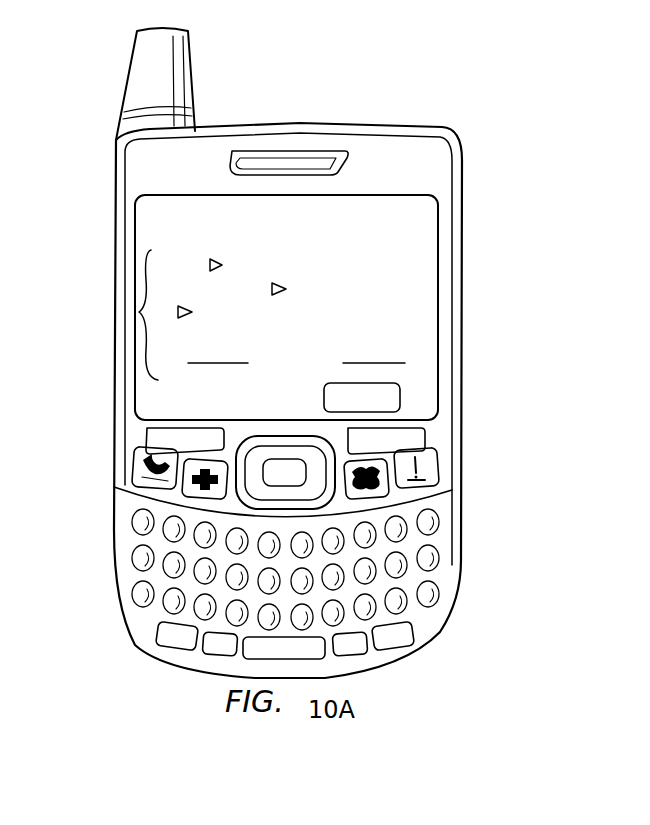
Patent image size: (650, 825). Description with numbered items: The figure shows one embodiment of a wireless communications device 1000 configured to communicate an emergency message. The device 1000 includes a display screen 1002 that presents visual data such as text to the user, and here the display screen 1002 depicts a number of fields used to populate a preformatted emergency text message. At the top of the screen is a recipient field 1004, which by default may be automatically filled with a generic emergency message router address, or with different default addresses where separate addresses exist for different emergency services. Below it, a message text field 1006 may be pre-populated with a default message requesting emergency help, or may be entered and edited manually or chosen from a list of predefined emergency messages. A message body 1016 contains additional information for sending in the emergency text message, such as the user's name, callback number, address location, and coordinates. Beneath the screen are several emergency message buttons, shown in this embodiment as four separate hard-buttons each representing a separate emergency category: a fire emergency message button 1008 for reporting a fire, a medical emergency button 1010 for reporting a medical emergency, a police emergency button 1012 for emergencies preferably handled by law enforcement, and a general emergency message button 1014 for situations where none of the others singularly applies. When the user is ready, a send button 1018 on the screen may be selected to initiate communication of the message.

The wireless communications device 1000 is at (351, 121).
The display screen 1002 is at (212, 405).
The recipient field 1004 is at (143, 212).
The message text field 1006 is at (143, 238).
The fire emergency message button 1008 is at (134, 464).
The medical emergency button 1010 is at (134, 486).
The police emergency button 1012 is at (387, 460).
The general emergency message button 1014 is at (436, 468).
The message body 1016 is at (140, 312).
The send button 1018 is at (400, 388).